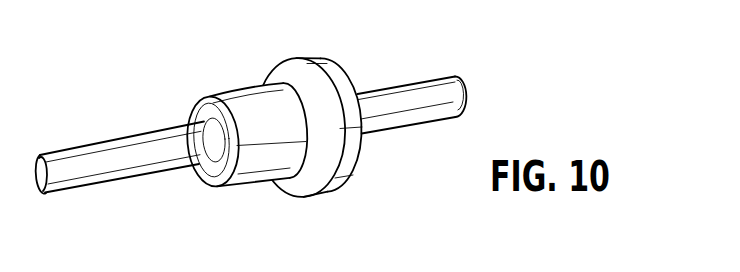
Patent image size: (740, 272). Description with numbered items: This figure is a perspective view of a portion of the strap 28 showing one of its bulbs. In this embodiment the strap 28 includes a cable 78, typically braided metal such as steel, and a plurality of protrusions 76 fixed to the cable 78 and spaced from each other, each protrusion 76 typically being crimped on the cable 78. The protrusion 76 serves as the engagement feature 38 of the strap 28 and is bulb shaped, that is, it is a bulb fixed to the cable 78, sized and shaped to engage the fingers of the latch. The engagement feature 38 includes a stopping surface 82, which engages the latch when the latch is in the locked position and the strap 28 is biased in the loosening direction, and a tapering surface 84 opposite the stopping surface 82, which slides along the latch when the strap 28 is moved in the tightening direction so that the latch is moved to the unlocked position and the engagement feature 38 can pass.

The strap 28 is at (288, 104).
The engagement feature 38 is at (222, 82).
The protrusion 76 is at (246, 99).
The cable 78 is at (397, 94).
The stopping surface 82 is at (365, 152).
The tapering surface 84 is at (302, 185).